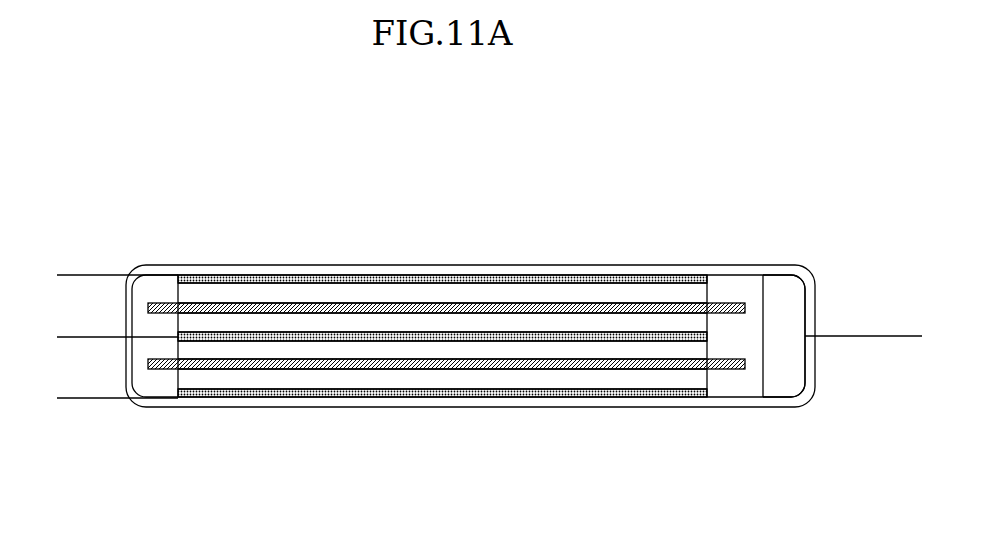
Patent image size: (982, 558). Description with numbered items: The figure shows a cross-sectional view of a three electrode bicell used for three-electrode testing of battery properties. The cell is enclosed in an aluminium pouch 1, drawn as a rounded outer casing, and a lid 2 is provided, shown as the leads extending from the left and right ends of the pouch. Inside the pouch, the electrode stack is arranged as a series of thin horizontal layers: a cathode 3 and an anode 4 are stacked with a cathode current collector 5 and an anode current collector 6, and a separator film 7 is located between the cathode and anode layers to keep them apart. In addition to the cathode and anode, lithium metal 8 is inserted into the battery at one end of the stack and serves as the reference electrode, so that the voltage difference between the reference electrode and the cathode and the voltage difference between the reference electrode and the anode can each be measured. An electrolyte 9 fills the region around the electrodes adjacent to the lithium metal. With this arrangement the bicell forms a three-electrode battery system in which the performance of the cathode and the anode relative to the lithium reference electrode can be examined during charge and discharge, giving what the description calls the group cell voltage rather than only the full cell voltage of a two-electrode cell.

The aluminium pouch 1 is at (747, 407).
The lid 2 is at (489, 338).
The cathode 3 is at (238, 293).
The anode 4 is at (589, 323).
The cathode current collector 5 is at (277, 275).
The anode current collector 6 is at (628, 330).
The separator film 7 is at (432, 303).
The lithium metal 8 is at (785, 313).
The electrolyte 9 is at (737, 293).